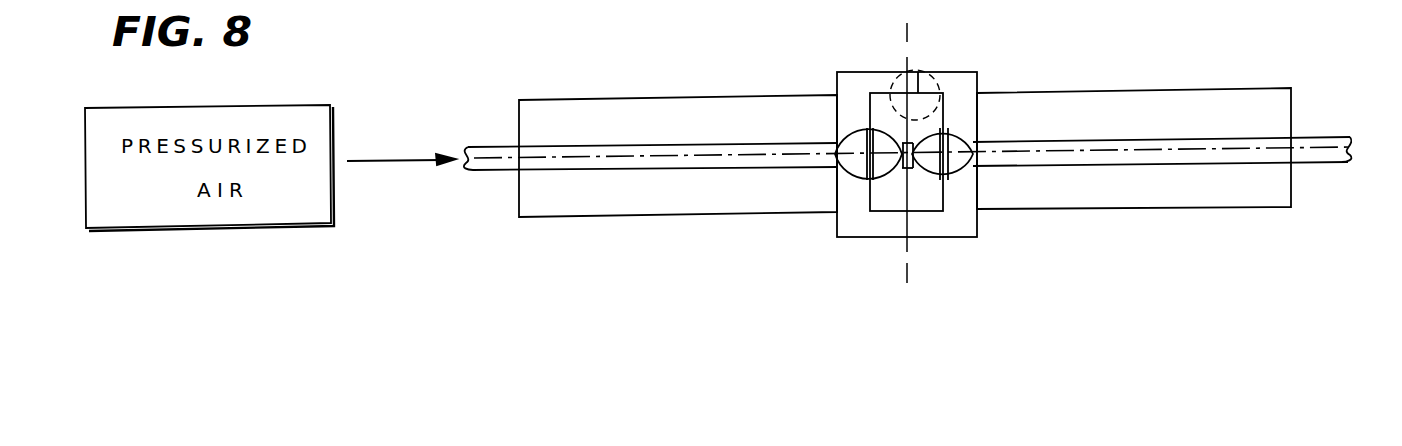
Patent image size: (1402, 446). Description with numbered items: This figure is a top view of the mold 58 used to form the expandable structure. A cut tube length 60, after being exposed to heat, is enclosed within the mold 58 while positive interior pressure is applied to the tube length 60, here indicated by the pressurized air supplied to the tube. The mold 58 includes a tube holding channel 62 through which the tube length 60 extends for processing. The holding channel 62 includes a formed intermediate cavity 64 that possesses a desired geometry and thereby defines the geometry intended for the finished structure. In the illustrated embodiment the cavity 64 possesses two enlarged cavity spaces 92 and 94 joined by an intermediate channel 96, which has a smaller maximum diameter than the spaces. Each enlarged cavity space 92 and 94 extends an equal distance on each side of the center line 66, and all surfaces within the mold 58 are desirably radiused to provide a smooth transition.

The mold 58 is at (1079, 106).
The tube length 60 is at (1313, 136).
The tube holding channel 62 is at (673, 143).
The intermediate cavity 64 is at (870, 232).
The center line 66 is at (907, 38).
The enlarged cavity space 92 is at (867, 127).
The enlarged cavity space 94 is at (952, 127).
The intermediate channel 96 is at (912, 167).